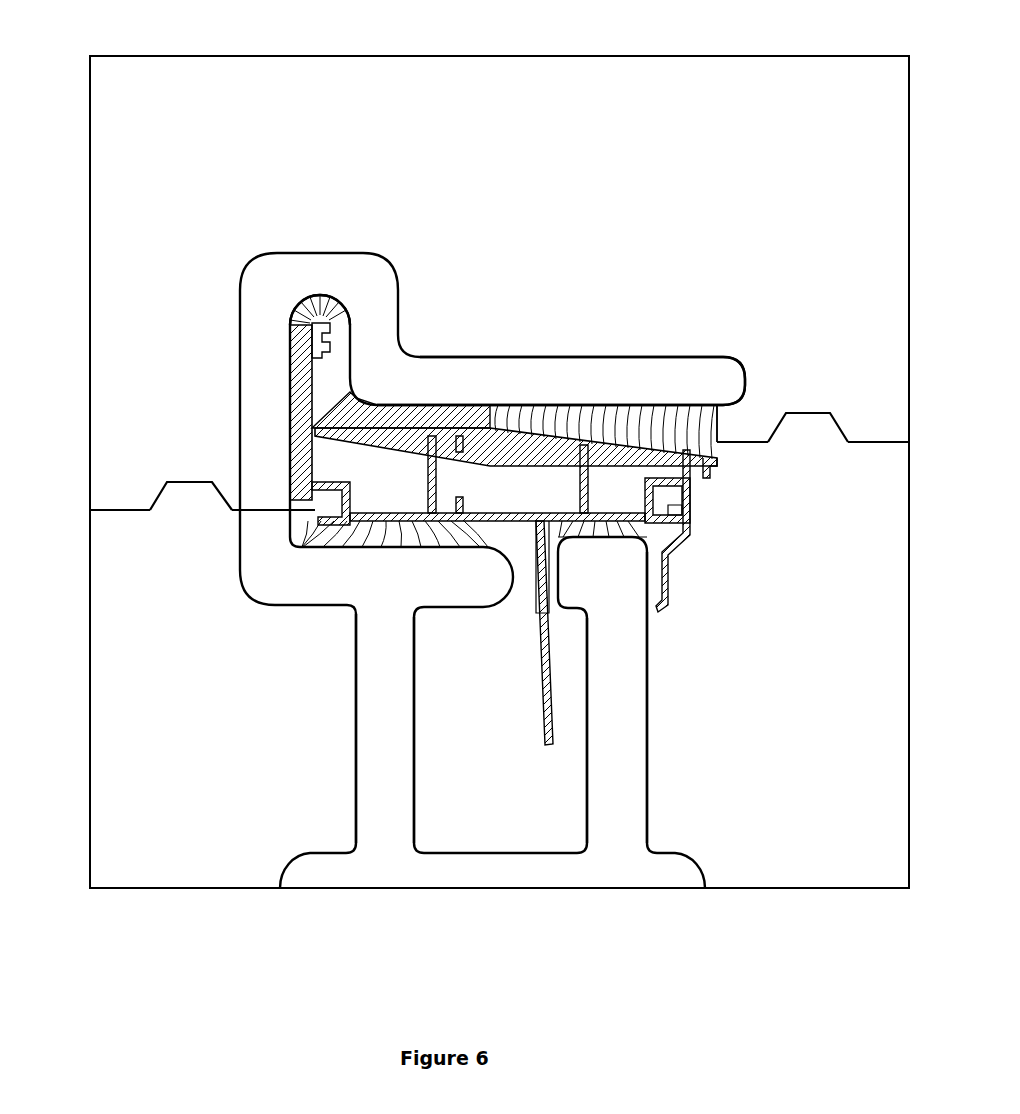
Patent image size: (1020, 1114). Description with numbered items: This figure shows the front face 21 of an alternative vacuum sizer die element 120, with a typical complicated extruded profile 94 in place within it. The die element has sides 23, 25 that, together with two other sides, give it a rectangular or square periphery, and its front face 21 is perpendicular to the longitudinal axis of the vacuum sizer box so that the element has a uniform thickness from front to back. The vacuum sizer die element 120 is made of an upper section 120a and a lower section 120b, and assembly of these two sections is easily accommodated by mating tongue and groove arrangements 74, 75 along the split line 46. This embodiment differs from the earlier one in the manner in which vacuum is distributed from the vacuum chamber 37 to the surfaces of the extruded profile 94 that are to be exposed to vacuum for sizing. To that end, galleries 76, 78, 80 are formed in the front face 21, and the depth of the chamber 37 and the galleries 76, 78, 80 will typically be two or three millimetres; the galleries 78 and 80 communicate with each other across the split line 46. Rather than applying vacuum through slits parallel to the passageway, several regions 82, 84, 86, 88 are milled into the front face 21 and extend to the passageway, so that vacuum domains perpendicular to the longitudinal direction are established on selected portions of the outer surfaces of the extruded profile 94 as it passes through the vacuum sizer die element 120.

The vacuum sizer die element 120 is at (603, 88).
The upper section 120a is at (719, 86).
The lower section 120b is at (820, 868).
The front face 21 is at (674, 185).
The side 23 is at (215, 893).
The side 25 is at (88, 772).
The vacuum chamber 37 is at (532, 870).
The split line 46 is at (862, 441).
The tongue and groove arrangement 74 is at (181, 495).
The tongue and groove arrangement 75 is at (184, 480).
The gallery 76 is at (631, 763).
The gallery 78 is at (377, 736).
The gallery 80 is at (460, 372).
The region 82 is at (597, 526).
The region 84 is at (434, 533).
The region 86 is at (300, 352).
The region 88 is at (545, 418).
The extruded profile 94 is at (689, 540).